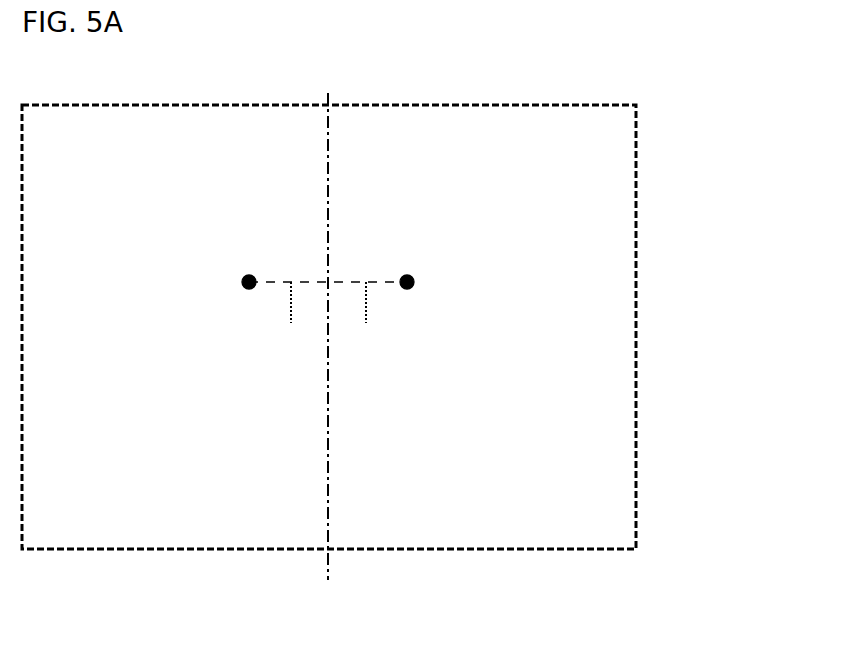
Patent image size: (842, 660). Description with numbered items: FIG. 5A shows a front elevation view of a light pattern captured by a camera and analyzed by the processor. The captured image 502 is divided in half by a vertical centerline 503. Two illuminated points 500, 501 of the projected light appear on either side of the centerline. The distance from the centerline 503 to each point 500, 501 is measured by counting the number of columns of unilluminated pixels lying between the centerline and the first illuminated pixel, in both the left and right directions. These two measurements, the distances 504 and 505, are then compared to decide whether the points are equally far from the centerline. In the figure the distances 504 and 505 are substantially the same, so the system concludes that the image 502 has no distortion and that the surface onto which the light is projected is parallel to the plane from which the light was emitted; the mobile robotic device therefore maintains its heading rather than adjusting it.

The point 500 is at (249, 275).
The point 501 is at (407, 275).
The image 502 is at (636, 223).
The vertical centerline 503 is at (328, 430).
The distance 504 is at (293, 320).
The distance 505 is at (368, 320).